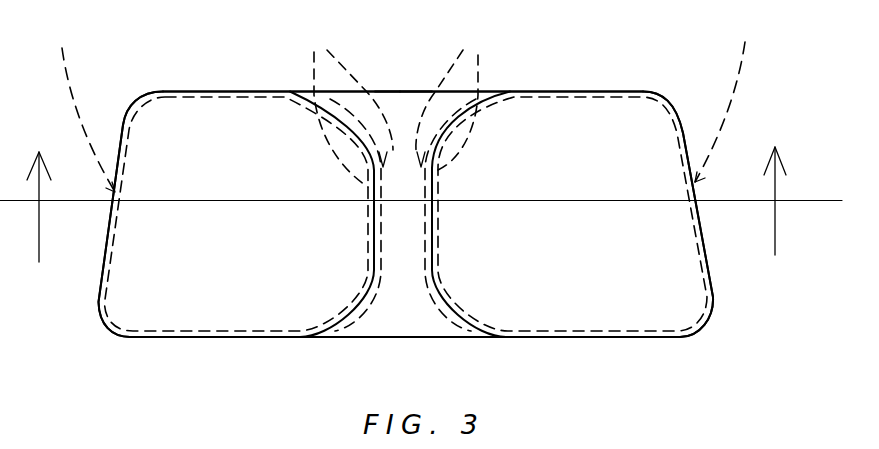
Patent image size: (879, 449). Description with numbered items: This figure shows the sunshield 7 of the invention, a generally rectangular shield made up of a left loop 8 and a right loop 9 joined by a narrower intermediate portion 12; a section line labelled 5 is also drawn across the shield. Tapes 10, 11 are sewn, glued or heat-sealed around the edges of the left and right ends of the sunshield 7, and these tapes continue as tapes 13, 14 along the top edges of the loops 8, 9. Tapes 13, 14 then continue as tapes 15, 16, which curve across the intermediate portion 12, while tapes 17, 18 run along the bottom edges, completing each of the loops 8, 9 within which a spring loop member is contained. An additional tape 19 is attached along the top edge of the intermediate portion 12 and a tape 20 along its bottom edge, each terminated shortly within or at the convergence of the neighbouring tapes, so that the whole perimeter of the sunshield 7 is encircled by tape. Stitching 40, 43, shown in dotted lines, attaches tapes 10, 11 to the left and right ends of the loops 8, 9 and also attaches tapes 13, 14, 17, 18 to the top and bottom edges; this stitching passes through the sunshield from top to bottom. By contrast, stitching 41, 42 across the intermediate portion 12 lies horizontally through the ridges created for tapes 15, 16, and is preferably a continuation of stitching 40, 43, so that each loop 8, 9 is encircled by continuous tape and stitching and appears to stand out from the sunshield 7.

The section line 5- 5 is at (421, 186).
The sunshield 7 is at (360, 357).
The loop 8 is at (246, 268).
The loop 9 is at (572, 267).
The tape 10 is at (103, 257).
The tape 11 is at (703, 228).
The intermediate portion 12 is at (391, 305).
The tape 13 is at (250, 91).
The tape 14 is at (587, 91).
The tape 15 is at (373, 222).
The tape 16 is at (437, 222).
The tape 17 is at (220, 338).
The tape 18 is at (618, 337).
The tape 19 is at (392, 90).
The tape 20 is at (423, 337).
The stitching 40 is at (80, 106).
The stitching 41 is at (345, 108).
The stitching 42 is at (449, 99).
The stitching 43 is at (726, 97).